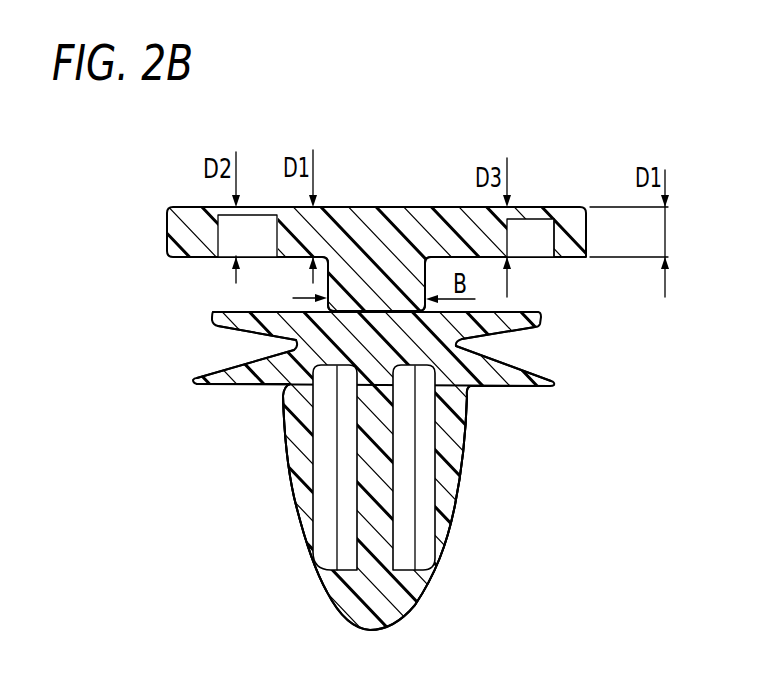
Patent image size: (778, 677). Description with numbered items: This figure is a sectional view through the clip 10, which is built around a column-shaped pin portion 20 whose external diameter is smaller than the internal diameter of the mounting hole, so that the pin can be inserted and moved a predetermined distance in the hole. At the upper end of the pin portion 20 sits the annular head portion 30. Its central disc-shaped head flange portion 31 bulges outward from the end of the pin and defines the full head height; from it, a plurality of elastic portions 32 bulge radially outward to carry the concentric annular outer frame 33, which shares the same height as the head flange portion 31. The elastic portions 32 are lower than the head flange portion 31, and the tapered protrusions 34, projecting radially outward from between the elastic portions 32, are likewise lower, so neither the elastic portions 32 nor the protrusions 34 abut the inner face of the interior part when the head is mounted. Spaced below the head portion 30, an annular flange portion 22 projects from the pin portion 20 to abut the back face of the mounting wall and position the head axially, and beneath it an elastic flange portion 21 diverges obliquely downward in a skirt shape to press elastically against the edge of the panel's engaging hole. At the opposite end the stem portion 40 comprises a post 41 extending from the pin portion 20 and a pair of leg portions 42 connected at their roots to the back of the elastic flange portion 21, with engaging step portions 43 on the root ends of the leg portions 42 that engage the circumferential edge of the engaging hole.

The clip 10 is at (143, 364).
The pin portion 20 is at (322, 283).
The elastic flange portion 21 is at (556, 384).
The annular flange portion 22 is at (541, 320).
The head portion 30 is at (144, 227).
The head flange portion 31 is at (367, 211).
The elastic portions 32 is at (228, 253).
The outer frame 33 is at (567, 218).
The protrusions 34 is at (483, 221).
The stem portion 40 is at (488, 529).
The post 41 is at (360, 523).
The leg portions 42 is at (305, 503).
The engaging step portions 43 is at (281, 392).